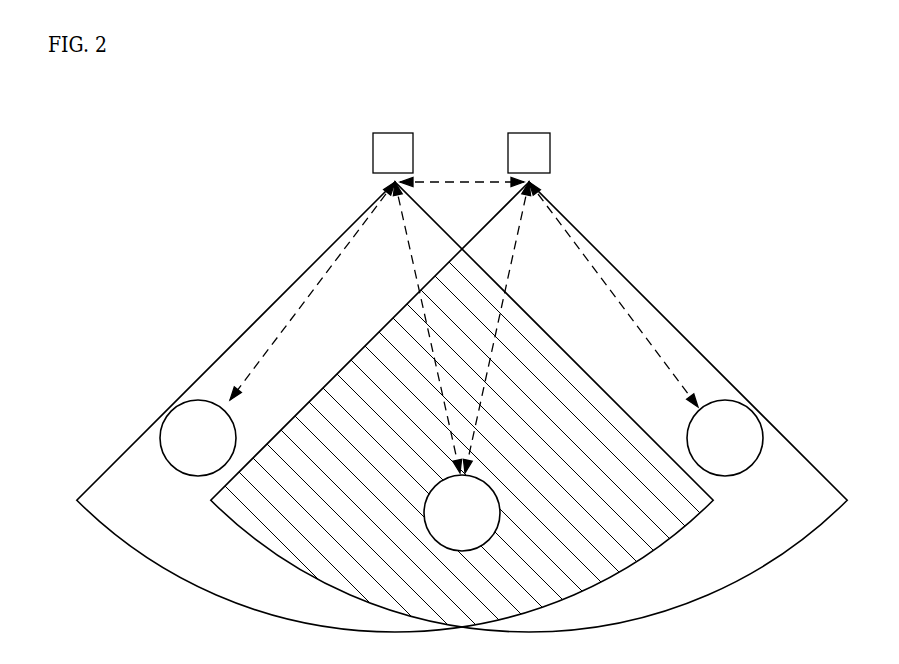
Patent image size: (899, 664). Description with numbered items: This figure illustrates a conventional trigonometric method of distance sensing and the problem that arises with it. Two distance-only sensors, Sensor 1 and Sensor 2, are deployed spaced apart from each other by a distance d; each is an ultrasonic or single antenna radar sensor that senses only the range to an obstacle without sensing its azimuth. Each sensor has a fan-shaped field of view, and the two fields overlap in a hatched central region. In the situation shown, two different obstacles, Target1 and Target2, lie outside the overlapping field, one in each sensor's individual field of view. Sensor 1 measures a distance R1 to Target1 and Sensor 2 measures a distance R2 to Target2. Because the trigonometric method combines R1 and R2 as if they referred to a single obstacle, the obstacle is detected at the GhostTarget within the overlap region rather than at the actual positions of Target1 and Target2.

The sensor 1 is at (395, 364).
The sensor 2 is at (529, 364).
The distance between sensors d is at (462, 172).
The distance sensed by sensor 1 R1 is at (346, 327).
The distance sensed by sensor 2 R2 is at (580, 327).
The target Target1 is at (168, 457).
The target Target2 is at (755, 457).
The ghost target GhostTarget is at (464, 532).